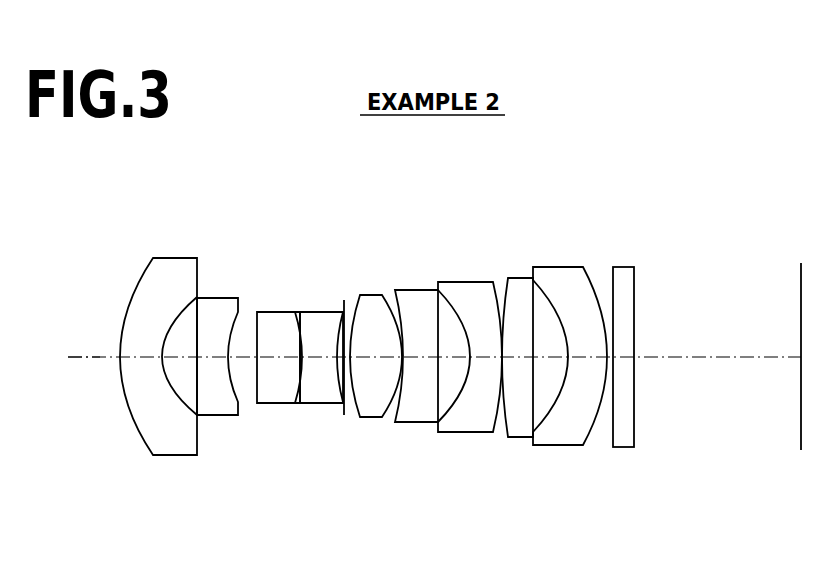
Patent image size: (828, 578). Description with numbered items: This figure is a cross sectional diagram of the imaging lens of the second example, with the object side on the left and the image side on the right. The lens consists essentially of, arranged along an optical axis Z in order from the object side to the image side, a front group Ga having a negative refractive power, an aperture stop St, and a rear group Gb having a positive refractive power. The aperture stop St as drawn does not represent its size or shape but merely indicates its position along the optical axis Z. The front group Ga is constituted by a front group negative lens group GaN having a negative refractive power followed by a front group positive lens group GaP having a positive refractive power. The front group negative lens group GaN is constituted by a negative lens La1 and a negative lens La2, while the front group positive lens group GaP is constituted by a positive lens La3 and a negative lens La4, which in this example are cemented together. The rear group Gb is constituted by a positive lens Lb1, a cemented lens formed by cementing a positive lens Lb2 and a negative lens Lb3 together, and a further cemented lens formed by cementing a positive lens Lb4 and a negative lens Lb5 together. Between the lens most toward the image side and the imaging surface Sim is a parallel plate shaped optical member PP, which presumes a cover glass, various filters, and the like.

The front group Ga is at (121, 190).
The front group negative lens group GaN is at (121, 223).
The front group positive lens group GaP is at (254, 223).
The rear group Gb is at (351, 190).
The optical axis Z is at (91, 355).
The negative lens La1 is at (170, 450).
The negative lens La2 is at (215, 405).
The positive lens La3 is at (275, 405).
The negative lens La4 is at (320, 405).
The aperture stop St is at (345, 400).
The positive lens Lb1 is at (373, 410).
The positive lens Lb2 is at (420, 413).
The negative lens Lb3 is at (468, 425).
The positive lens Lb4 is at (525, 433).
The negative lens Lb5 is at (570, 440).
The parallel plate shaped optical member PP is at (623, 440).
The imaging surface Sim is at (801, 430).